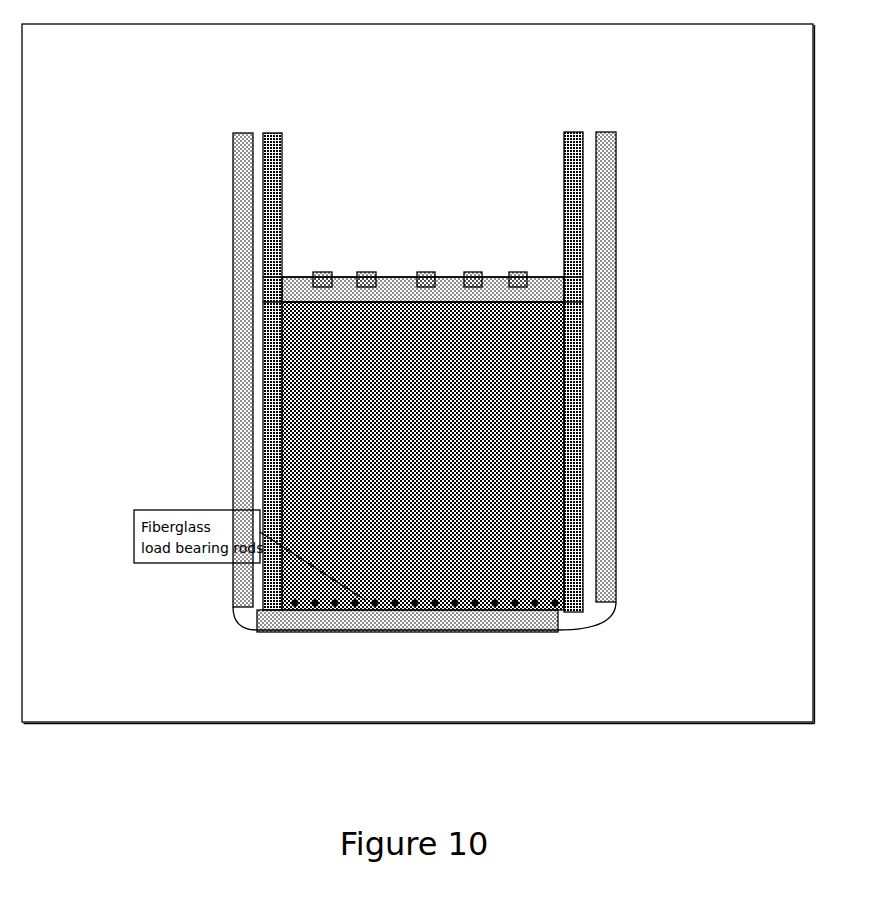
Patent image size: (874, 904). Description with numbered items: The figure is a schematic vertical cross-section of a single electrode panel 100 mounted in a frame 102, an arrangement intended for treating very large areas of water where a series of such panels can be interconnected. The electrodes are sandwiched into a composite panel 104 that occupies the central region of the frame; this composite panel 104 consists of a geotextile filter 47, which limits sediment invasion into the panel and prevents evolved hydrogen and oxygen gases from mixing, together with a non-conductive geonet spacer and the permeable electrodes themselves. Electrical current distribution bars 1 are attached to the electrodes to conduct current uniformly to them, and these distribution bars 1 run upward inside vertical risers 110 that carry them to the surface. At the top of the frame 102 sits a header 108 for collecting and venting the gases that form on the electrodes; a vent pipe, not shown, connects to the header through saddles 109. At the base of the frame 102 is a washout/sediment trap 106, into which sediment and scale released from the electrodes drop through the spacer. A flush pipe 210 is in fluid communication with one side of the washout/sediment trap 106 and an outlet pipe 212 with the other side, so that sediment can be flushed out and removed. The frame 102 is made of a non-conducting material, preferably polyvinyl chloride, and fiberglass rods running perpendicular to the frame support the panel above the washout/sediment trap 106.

The electrical current distribution bar 1 is at (272, 133).
The geotextile filter 47 is at (263, 357).
The electrode panel 100 is at (636, 676).
The frame 102 is at (582, 370).
The composite panel 104 is at (568, 333).
The washout/sediment trap 106 is at (373, 620).
The header 108 is at (388, 280).
The saddle 109 is at (505, 270).
The vertical riser 110 is at (583, 218).
The flush pipe 210 is at (235, 427).
The outlet pipe 212 is at (605, 427).